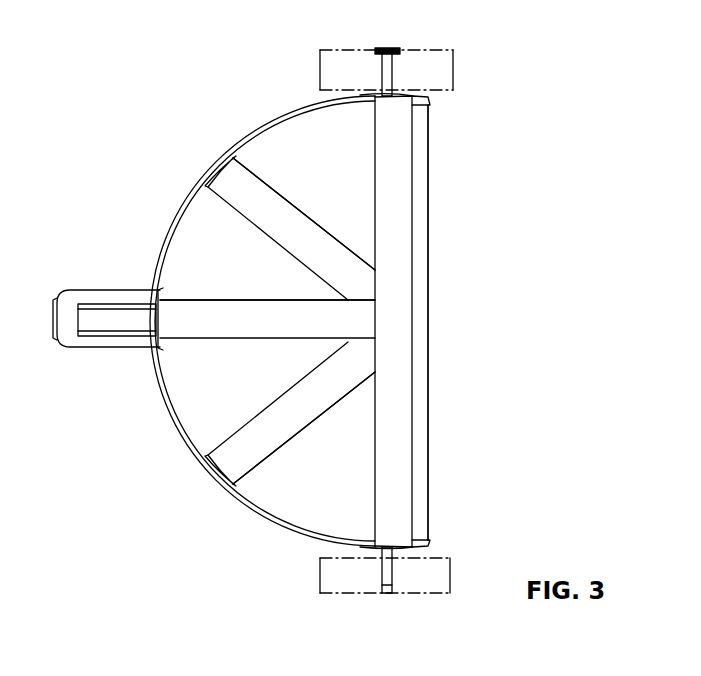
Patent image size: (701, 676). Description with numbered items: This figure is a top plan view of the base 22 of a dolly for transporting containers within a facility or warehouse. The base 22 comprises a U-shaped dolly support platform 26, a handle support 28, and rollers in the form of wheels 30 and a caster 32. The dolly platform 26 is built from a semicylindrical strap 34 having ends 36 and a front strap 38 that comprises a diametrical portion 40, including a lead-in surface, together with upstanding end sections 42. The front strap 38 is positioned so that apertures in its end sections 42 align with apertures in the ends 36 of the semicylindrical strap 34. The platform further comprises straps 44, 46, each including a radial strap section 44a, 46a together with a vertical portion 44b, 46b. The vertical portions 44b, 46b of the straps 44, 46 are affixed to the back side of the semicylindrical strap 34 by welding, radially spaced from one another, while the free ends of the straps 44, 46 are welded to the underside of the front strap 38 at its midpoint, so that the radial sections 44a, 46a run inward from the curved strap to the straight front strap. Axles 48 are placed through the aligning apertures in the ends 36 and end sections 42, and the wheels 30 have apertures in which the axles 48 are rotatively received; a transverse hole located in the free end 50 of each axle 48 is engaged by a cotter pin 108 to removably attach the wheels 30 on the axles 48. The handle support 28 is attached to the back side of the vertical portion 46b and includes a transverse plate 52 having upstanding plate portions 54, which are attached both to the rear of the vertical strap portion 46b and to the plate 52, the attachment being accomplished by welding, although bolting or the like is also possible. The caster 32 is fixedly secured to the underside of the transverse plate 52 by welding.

The base 22 is at (216, 118).
The dolly support platform 26 is at (437, 258).
The handle support 28 is at (80, 272).
The wheels 30 is at (455, 71).
The caster 32 is at (82, 346).
The semicylindrical strap 34 is at (266, 514).
The ends 36 is at (430, 100).
The front strap 38 is at (432, 412).
The diametrical portion 40 is at (418, 340).
The end sections 42 is at (360, 95).
The strap 44 is at (304, 212).
The radial strap section 44a is at (268, 197).
The vertical portion 44b is at (212, 165).
The strap 46 is at (268, 340).
The radial strap section 46a is at (215, 302).
The vertical portion 46b is at (165, 290).
The axles 48 is at (392, 72).
The free end 50 is at (385, 595).
The transverse plate 52 is at (110, 347).
The upstanding plate portions 54 is at (122, 308).
The cotter pin 108 is at (392, 50).